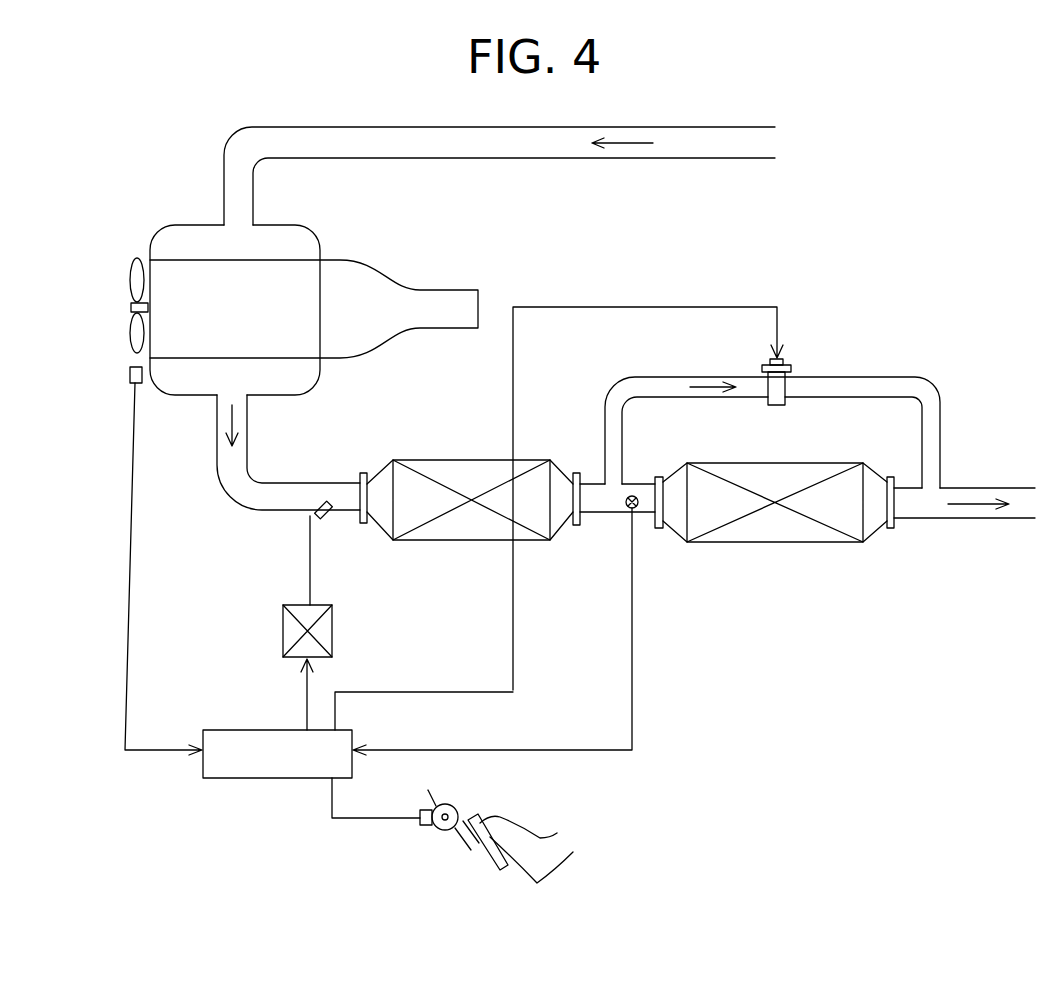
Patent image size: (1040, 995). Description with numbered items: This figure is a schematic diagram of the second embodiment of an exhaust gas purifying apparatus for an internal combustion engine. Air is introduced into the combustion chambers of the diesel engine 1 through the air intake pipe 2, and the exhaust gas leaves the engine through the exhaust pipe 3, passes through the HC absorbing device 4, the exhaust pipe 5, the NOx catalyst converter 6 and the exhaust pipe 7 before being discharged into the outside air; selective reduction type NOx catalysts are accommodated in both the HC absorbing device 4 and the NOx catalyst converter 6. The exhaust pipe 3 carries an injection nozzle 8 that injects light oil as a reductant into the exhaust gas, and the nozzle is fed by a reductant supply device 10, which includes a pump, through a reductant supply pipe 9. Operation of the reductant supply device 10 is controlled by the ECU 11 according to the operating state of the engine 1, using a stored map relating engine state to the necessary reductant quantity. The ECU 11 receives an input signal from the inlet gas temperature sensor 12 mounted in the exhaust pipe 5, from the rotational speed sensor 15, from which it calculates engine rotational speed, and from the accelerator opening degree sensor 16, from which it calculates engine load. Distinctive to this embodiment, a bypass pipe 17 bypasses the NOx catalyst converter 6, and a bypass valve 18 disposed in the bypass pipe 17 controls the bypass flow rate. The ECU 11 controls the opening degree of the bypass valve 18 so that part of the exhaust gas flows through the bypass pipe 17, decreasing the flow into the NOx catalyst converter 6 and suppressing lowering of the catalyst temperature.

The diesel engine 1 is at (338, 255).
The air intake pipe 2 is at (222, 178).
The exhaust pipe 3 is at (220, 497).
The HC absorbing device 4 is at (450, 460).
The exhaust pipe 5 is at (598, 520).
The NOx catalyst converter 6 is at (776, 545).
The exhaust pipe 7 is at (970, 497).
The injection nozzle 8 is at (330, 518).
The reductant supply pipe 9 is at (308, 563).
The reductant supply device 10 is at (283, 632).
The electronic control unit 11 is at (233, 780).
The inlet gas temperature sensor 12 is at (634, 495).
The rotational speed sensor 15 is at (128, 375).
The accelerator opening degree sensor 16 is at (425, 828).
The bypass pipe 17 is at (863, 377).
The bypass valve 18 is at (787, 358).